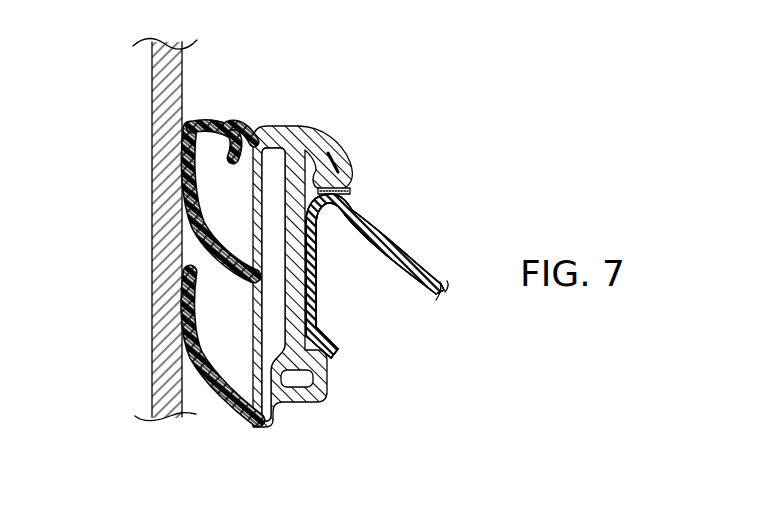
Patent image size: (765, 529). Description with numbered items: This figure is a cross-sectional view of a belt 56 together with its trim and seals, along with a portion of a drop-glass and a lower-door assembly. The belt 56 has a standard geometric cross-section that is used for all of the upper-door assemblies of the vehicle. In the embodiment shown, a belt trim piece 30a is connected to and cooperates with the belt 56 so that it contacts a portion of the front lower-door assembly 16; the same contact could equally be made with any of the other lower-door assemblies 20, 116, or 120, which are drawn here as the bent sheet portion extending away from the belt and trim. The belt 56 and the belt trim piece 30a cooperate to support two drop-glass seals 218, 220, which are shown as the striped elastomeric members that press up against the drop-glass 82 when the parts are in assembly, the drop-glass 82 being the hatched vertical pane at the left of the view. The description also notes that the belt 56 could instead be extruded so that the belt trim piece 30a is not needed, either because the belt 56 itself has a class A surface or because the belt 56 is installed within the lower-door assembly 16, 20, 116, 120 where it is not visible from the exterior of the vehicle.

The drop-glass 82 is at (151, 222).
The drop-glass seal 218 is at (190, 122).
The drop-glass seal 220 is at (200, 385).
The belt trim piece 30a is at (311, 127).
The belt 56 is at (305, 268).
The front lower-door assembly 16 is at (400, 245).
The lower-door assembly 20 is at (400, 245).
The lower-door assembly 116 is at (400, 245).
The lower-door assembly 120 is at (400, 245).